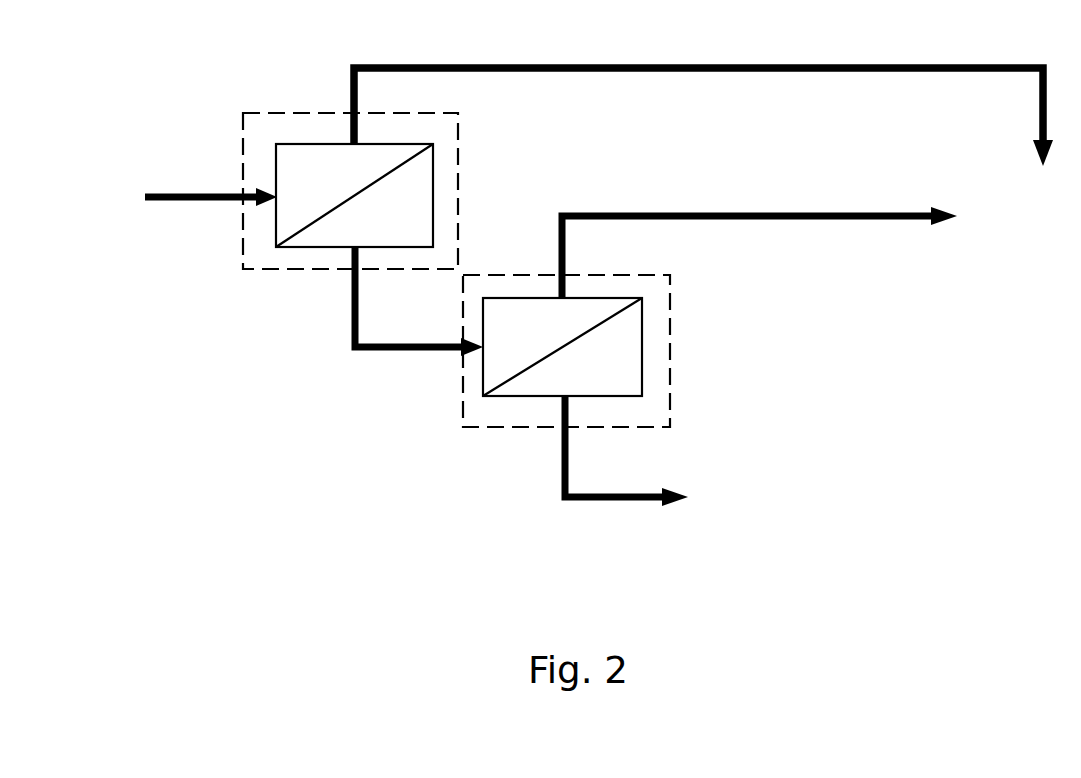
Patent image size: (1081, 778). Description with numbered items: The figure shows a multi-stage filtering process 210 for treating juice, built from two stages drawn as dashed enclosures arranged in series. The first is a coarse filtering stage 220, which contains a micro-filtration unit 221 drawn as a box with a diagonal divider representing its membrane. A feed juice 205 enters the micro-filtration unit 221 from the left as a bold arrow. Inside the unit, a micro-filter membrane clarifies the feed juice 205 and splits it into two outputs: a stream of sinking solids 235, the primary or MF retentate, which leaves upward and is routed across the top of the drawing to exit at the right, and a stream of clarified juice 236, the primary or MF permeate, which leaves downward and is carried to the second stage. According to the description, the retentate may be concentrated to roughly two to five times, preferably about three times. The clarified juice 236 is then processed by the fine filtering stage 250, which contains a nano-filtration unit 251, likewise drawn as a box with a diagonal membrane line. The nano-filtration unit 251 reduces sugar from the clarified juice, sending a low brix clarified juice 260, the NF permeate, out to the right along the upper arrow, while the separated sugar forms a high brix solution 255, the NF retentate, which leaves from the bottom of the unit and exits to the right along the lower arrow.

The feed juice 205 is at (199, 188).
The multi-stage filtering process 210 is at (587, 305).
The coarse filtering stage 220 is at (341, 207).
The micro-filtration unit 221 is at (354, 195).
The stream of sinking solids 235 is at (703, 100).
The stream of clarified juice 236 is at (412, 315).
The fine filtering stage 250 is at (556, 365).
The nano-filtration unit 251 is at (562, 347).
The high brix solution 255 is at (626, 461).
The low brix clarified juice 260 is at (759, 241).